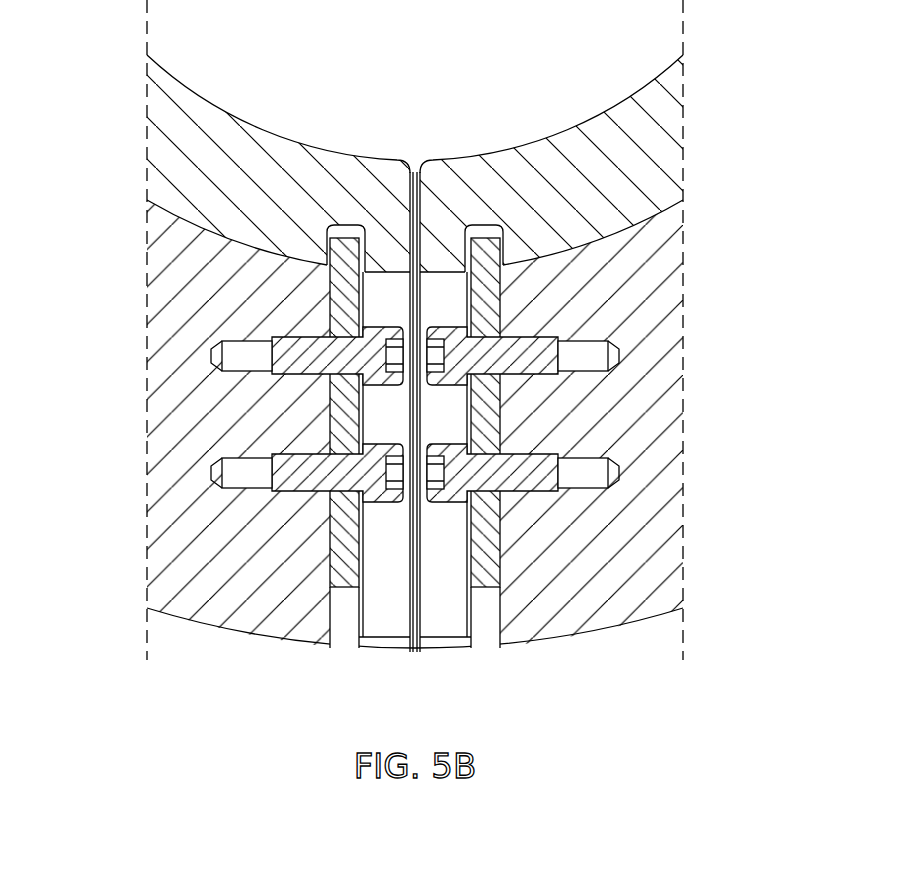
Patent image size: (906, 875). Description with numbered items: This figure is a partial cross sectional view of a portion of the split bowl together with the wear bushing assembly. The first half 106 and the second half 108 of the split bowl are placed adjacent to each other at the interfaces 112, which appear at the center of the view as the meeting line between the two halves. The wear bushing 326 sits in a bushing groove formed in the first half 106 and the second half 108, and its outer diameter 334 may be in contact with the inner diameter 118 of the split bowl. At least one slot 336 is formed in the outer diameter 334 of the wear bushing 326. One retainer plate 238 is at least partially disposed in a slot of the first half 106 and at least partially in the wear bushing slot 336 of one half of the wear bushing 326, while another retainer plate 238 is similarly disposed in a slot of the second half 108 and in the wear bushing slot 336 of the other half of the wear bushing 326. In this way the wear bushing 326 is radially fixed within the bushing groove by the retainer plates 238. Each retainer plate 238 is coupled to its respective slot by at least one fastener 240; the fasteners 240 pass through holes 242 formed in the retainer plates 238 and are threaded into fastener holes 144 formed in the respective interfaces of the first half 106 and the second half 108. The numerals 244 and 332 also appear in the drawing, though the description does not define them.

The first half 106 is at (215, 598).
The second half 108 is at (665, 607).
The interfaces 112 is at (415, 651).
The inner diameter 118 is at (172, 215).
The fastener holes 144 is at (597, 340).
The retainer plate 238 is at (343, 590).
The fastener 240 is at (448, 487).
The holes 242 is at (503, 505).
The fastener head 244 is at (364, 500).
The wear bushing 326 is at (667, 137).
The outer surface 332 is at (252, 121).
The outer diameter 334 is at (681, 200).
The slot 336 is at (350, 226).